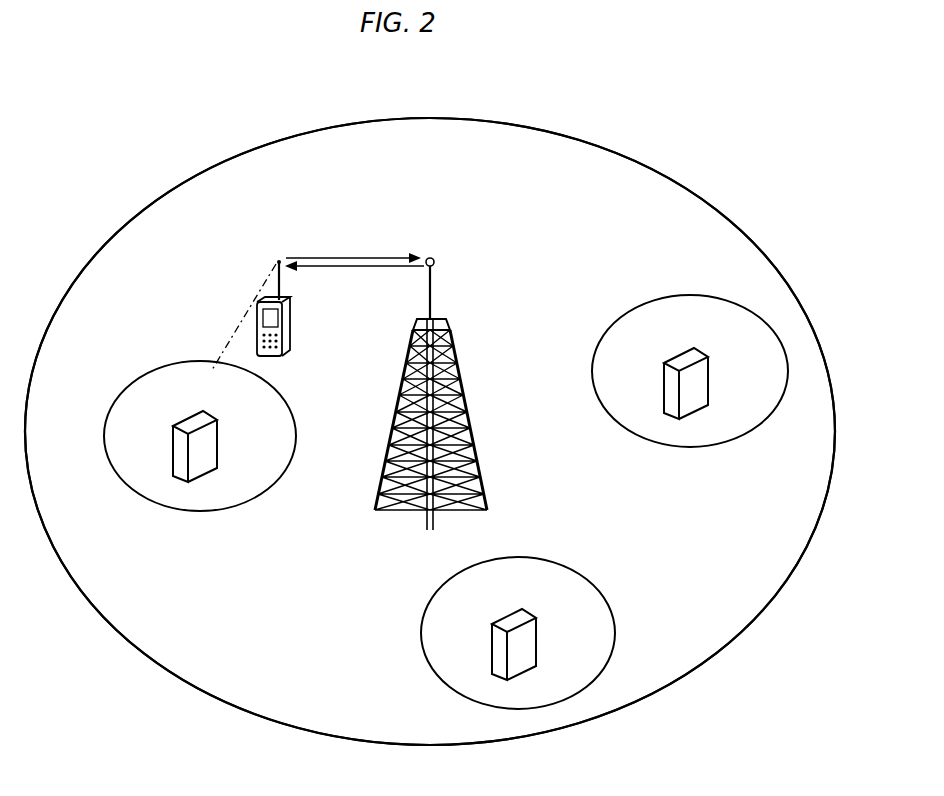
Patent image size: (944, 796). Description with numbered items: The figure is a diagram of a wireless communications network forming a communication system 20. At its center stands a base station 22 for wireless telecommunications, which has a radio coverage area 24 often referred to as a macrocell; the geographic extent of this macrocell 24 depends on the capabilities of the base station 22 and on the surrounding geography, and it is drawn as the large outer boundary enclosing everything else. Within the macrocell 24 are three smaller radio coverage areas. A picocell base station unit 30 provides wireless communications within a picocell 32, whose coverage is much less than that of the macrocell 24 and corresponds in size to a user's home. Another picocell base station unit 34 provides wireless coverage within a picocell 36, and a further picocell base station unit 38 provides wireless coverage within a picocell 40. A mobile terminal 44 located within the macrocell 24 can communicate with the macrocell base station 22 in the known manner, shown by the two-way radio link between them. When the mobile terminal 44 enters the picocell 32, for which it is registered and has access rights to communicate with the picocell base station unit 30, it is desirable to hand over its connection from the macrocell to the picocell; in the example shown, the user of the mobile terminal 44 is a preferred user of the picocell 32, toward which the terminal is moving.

The communication system 20 is at (182, 155).
The base station 22 is at (473, 421).
The radio coverage area 24 is at (628, 161).
The picocell base station unit 30 is at (210, 446).
The picocell 32 is at (137, 376).
The picocell base station unit 34 is at (528, 641).
The picocell 36 is at (420, 632).
The picocell base station unit 38 is at (700, 380).
The picocell 40 is at (627, 315).
The mobile terminal 44 is at (291, 331).